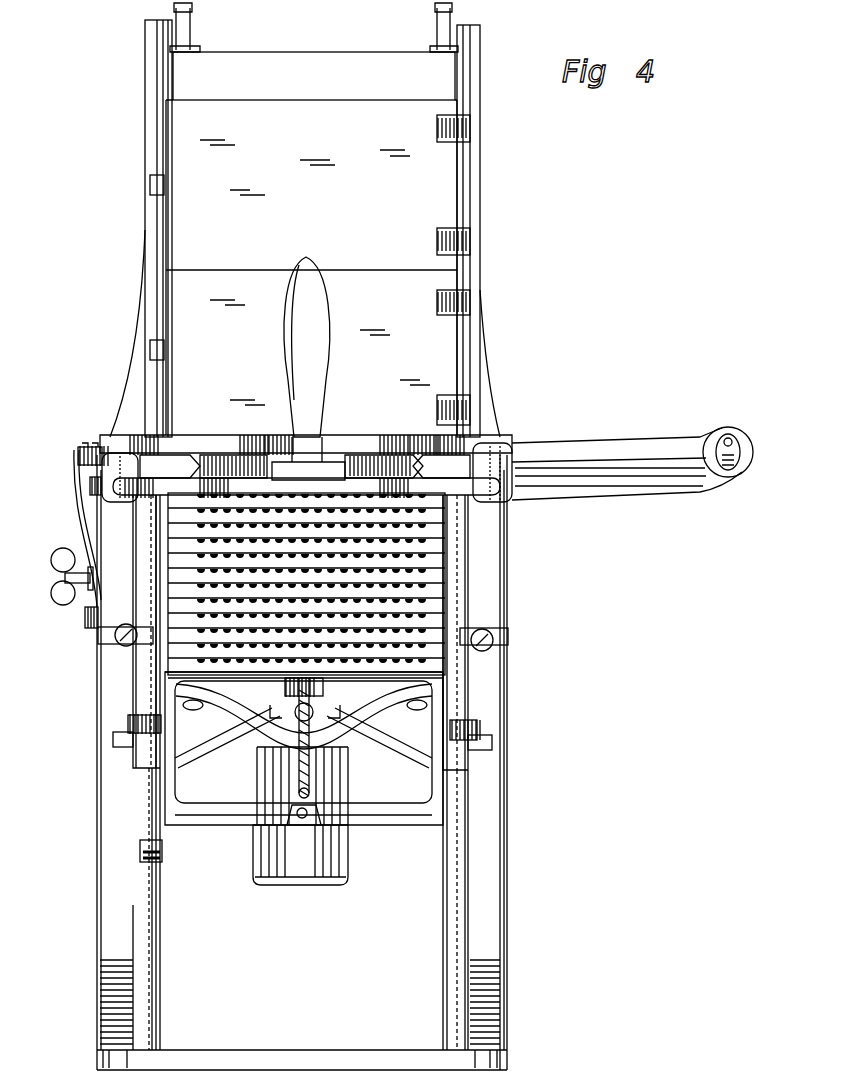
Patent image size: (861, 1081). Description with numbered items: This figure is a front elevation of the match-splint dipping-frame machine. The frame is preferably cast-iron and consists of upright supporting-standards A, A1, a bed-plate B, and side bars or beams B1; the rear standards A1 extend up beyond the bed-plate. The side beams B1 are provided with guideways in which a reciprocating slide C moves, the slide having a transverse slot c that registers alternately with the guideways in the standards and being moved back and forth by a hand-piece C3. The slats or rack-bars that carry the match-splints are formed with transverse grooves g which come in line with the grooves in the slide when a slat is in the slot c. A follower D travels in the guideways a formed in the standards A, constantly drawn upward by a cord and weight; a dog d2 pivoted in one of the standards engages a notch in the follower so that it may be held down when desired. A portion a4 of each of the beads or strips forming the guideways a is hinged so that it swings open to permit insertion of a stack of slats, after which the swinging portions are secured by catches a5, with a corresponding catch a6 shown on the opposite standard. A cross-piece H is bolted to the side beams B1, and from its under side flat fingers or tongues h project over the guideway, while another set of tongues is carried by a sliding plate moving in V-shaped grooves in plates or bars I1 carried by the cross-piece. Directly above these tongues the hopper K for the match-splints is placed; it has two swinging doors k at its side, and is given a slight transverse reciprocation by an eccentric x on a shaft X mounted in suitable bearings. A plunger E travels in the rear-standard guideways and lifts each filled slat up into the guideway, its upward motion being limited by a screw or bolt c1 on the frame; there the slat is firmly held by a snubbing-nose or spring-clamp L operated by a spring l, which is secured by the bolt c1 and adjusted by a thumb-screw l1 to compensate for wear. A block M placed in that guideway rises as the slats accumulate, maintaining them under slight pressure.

The upright supporting-standard A is at (302, 762).
The rear upright standard A1 is at (150, 82).
The block M is at (314, 76).
The swinging door k is at (311, 267).
The hopper K is at (327, 270).
The hand-piece C3 is at (307, 347).
The cross-piece H is at (306, 445).
The guide plate or bar I1 is at (305, 466).
The bed-plate B is at (120, 477).
The side bar or beam B1 is at (492, 472).
The reciprocating slide C is at (306, 556).
The transverse groove g is at (311, 578).
The flat finger or tongue h is at (510, 500).
The snubbing-nose or spring-clamp L is at (78, 455).
The spring l is at (74, 492).
The thumb-screw l1 is at (61, 576).
The transverse slot c is at (92, 501).
The screw or bolt c1 is at (85, 618).
The catch a5 is at (101, 640).
The set screw a6 is at (508, 632).
The hinged portion of bead or strip a4 is at (302, 714).
The guideway a is at (470, 718).
The plunger E is at (384, 738).
The follower D is at (348, 730).
The dog d2 is at (162, 852).
The shaft X is at (738, 478).
The eccentric x is at (722, 432).